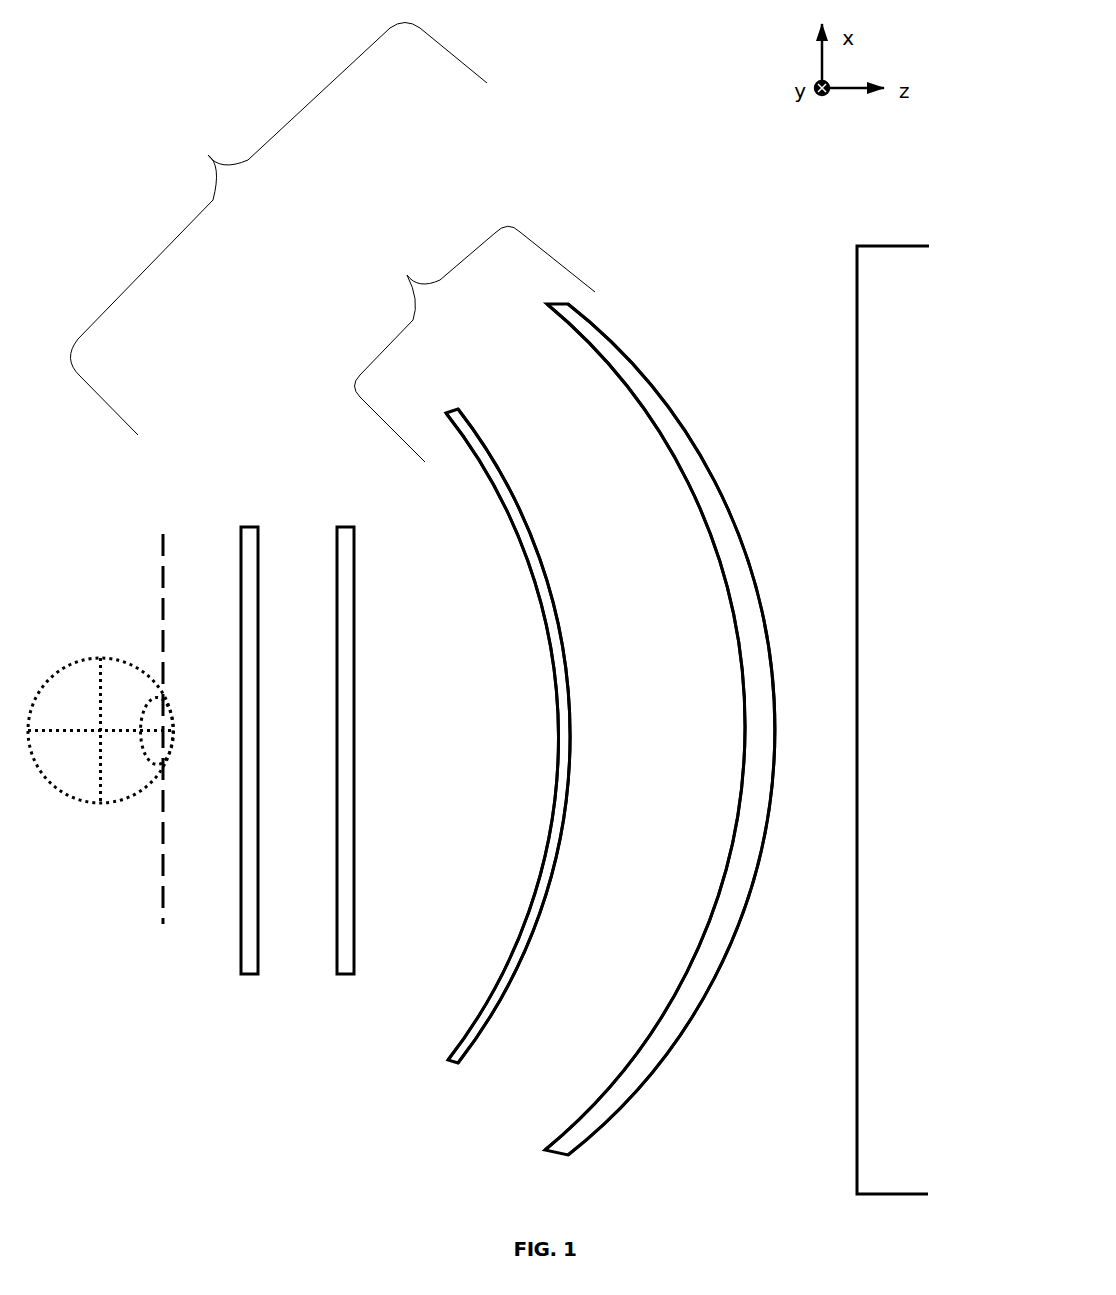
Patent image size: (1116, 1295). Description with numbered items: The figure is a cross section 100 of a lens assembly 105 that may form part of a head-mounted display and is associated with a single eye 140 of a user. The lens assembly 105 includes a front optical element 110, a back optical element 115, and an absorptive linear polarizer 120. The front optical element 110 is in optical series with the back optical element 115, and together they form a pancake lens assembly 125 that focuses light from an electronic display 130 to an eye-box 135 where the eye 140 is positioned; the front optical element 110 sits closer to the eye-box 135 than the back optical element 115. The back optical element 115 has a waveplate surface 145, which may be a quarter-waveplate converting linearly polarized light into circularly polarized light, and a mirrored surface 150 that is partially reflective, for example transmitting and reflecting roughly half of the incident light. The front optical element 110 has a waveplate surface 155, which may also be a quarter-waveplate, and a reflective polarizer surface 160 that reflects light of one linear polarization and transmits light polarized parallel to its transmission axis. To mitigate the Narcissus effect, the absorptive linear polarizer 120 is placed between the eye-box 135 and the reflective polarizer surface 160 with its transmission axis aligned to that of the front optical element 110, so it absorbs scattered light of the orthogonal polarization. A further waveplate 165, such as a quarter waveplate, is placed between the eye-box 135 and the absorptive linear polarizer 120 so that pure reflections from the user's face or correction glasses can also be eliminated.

The cross section 100 is at (62, 12).
The lens assembly 105 is at (170, 142).
The front optical element 110 is at (463, 446).
The back optical element 115 is at (612, 335).
The absorptive linear polarizer 120 is at (337, 924).
The pancake lens assembly 125 is at (358, 293).
The electronic display 130 is at (857, 298).
The eye-box 135 is at (163, 924).
The eye 140 is at (80, 805).
The waveplate surface 145 is at (694, 1021).
The mirrored surface 150 is at (694, 956).
The waveplate surface 155 is at (482, 1031).
The reflective polarizer surface 160 is at (495, 977).
The waveplate 165 is at (240, 537).